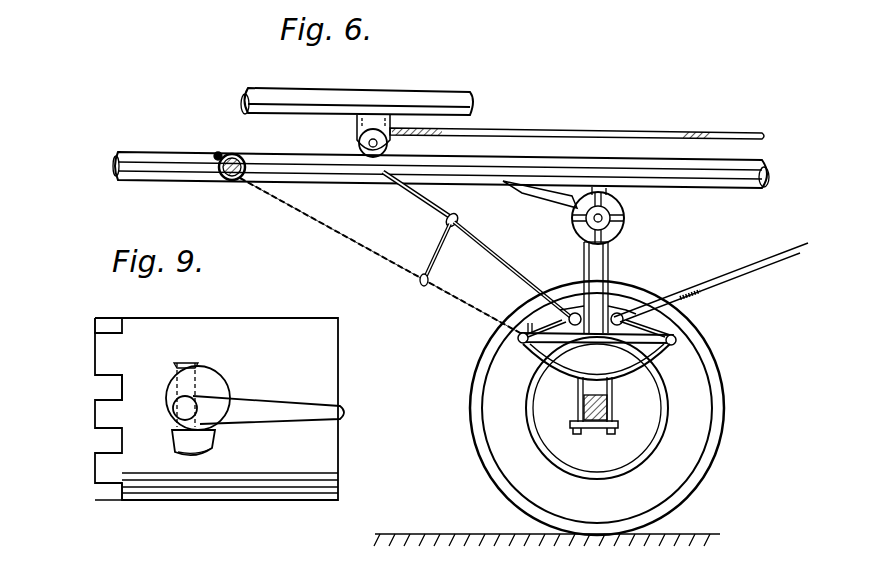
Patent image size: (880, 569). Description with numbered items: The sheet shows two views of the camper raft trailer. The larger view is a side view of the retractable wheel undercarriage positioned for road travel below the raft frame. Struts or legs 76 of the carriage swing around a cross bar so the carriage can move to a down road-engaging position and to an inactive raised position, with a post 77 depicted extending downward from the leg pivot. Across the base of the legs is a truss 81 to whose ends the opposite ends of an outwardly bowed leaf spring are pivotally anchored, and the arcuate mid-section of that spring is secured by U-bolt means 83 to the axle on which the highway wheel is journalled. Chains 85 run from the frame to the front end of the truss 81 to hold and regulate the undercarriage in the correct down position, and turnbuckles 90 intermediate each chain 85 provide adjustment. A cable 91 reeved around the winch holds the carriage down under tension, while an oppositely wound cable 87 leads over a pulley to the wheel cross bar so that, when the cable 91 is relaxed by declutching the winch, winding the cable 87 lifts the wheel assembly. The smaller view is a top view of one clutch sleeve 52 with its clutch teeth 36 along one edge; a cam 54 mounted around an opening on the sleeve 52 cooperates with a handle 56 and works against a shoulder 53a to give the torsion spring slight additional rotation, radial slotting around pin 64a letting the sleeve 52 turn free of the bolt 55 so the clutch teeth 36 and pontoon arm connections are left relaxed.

In FIG. 9, the clutch teeth 36 is at (102, 360).
In FIG. 9, the clutch sleeve 52 is at (254, 322).
In FIG. 9, the shoulder 53a is at (218, 446).
In FIG. 9, the cam 54 is at (202, 372).
In FIG. 9, the bolt 55 is at (195, 396).
In FIG. 9, the handle 56 is at (258, 405).
In FIG. 9, the pin 64a is at (164, 383).
In FIG. 6, the struts or legs 76 is at (624, 226).
In FIG. 6, the post 77 is at (612, 264).
In FIG. 6, the truss 81 is at (688, 320).
In FIG. 6, the U-bolt means 83 is at (618, 398).
In FIG. 6, the chains 85 is at (605, 408).
In FIG. 6, the cable 87 is at (633, 131).
In FIG. 6, the turnbuckles 90 is at (402, 270).
In FIG. 6, the cable 91 is at (724, 279).